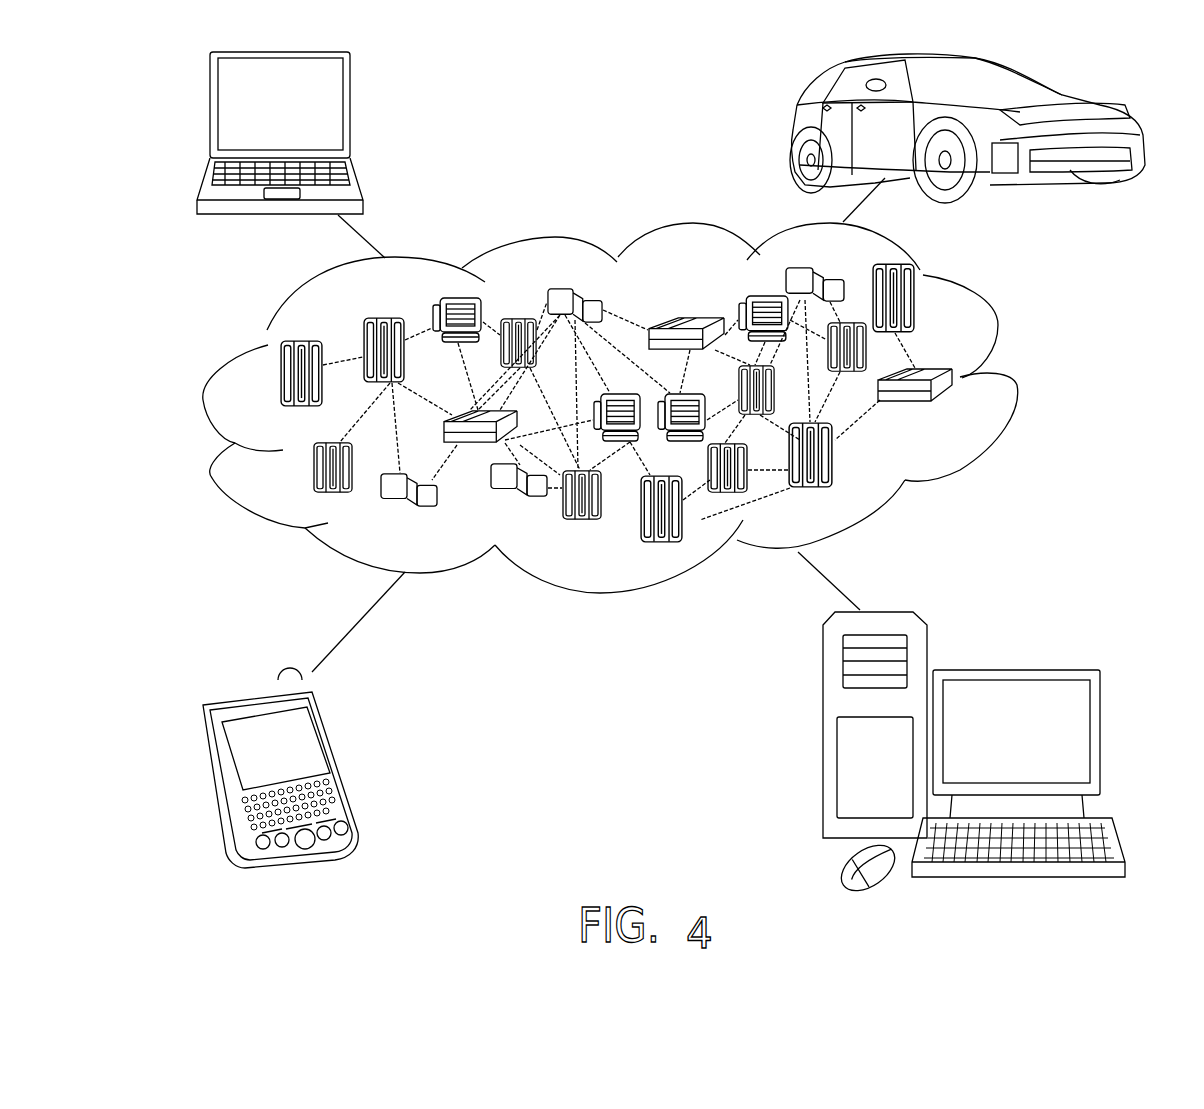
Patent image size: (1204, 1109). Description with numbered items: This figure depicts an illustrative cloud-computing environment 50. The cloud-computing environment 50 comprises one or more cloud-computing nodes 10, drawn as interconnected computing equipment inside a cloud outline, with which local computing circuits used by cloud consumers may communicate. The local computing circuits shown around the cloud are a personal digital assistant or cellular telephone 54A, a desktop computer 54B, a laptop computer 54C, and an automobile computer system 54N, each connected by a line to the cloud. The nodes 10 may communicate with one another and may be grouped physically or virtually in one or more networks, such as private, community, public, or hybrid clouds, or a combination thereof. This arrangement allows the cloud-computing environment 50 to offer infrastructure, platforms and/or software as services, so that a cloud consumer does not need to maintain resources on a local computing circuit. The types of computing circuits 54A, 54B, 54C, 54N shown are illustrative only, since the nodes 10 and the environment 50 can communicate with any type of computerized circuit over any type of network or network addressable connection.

The personal digital assistant or cellular telephone 54A is at (338, 760).
The desktop computer 54B is at (1012, 668).
The laptop computer 54C is at (352, 112).
The automobile computer system 54N is at (795, 128).
The cloud-computing environment 50 is at (636, 408).
The cloud-computing node 10 is at (956, 412).